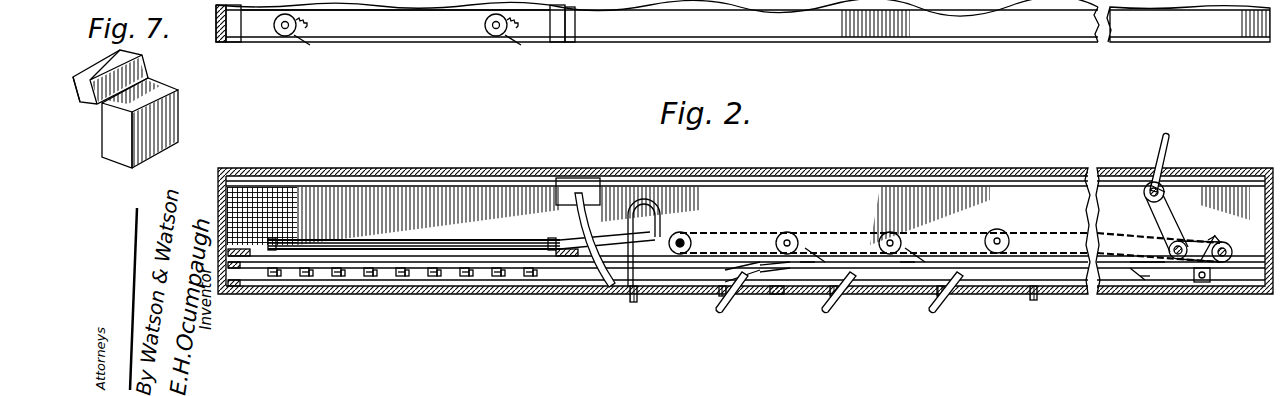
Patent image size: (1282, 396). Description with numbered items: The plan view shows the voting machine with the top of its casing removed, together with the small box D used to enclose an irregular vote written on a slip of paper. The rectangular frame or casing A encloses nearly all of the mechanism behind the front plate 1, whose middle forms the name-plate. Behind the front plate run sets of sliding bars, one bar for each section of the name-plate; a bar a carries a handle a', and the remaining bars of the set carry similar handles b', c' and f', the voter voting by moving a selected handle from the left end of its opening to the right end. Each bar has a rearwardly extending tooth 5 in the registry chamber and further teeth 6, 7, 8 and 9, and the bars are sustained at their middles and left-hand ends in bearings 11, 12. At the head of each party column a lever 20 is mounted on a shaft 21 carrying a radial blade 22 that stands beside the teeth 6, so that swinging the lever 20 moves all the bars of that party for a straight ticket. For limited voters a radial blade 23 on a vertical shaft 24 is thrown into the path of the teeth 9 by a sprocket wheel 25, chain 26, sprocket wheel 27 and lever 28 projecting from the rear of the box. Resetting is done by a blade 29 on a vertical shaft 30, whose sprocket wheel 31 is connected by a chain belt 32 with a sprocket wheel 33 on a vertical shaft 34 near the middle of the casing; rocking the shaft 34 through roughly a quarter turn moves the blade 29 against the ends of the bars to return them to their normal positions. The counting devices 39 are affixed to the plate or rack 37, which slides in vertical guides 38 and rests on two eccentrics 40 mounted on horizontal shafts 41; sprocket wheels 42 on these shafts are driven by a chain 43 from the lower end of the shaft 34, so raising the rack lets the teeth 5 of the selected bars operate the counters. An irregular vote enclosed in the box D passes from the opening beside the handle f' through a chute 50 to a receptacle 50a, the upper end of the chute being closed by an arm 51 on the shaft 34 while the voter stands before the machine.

In FIG. 2, the front plate 1 is at (898, 286).
In FIG. 2, the tooth 5 is at (343, 270).
In FIG. 2, the tooth 6 is at (812, 248).
In FIG. 2, the tooth 7 is at (914, 248).
In FIG. 2, the tooth 8 is at (1008, 241).
In FIG. 2, the tooth 9 is at (1146, 282).
In FIG. 2, the bearing 11 is at (244, 294).
In FIG. 2, the bearing 12 is at (770, 294).
In FIG. 2, the lever 20 is at (718, 310).
In FIG. 2, the shaft 21 is at (790, 232).
In FIG. 2, the radial blade 22 is at (776, 288).
In FIG. 2, the radial blade 23 is at (1140, 272).
In FIG. 2, the vertical shaft 24 is at (1160, 265).
In FIG. 2, the sprocket wheel 25 is at (1217, 236).
In FIG. 2, the chain 26 is at (1175, 205).
In FIG. 2, the sprocket wheel 27 is at (1145, 196).
In FIG. 2, the lever 28 is at (1174, 162).
In FIG. 2, the blade 29 is at (1220, 235).
In FIG. 2, the vertical shaft 30 is at (1232, 248).
In FIG. 2, the sprocket wheel 31 is at (1218, 282).
In FIG. 2, the chain belt 32 is at (882, 235).
In FIG. 2, the sprocket wheel 33 is at (950, 247).
In FIG. 2, the vertical shaft 34 is at (690, 236).
In FIG. 7, the plate or rack 37 is at (421, 10).
In FIG. 2, the plate or rack 37 is at (388, 252).
In FIG. 7, the vertical guides 38 is at (230, 38).
In FIG. 2, the vertical guides 38 is at (226, 250).
In FIG. 2, the counting devices 39 is at (303, 278).
In FIG. 7, the eccentrics 40 is at (285, 30).
In FIG. 7, the horizontal shafts 41 is at (278, 33).
In FIG. 2, the horizontal shafts 41 is at (290, 245).
In FIG. 7, the sprocket wheels 42 is at (418, 42).
In FIG. 2, the chain 43 is at (442, 240).
In FIG. 2, the chute 50 is at (580, 210).
In FIG. 2, the receptacle 50a is at (556, 192).
In FIG. 2, the arm 51 is at (672, 200).
In FIG. 2, the frame or casing A is at (745, 218).
In FIG. 7, the box D is at (185, 106).
In FIG. 2, the bar a is at (1013, 299).
In FIG. 2, the handle a' is at (736, 308).
In FIG. 2, the handle b' is at (839, 308).
In FIG. 2, the handle c' is at (946, 308).
In FIG. 2, the handle f' is at (621, 316).